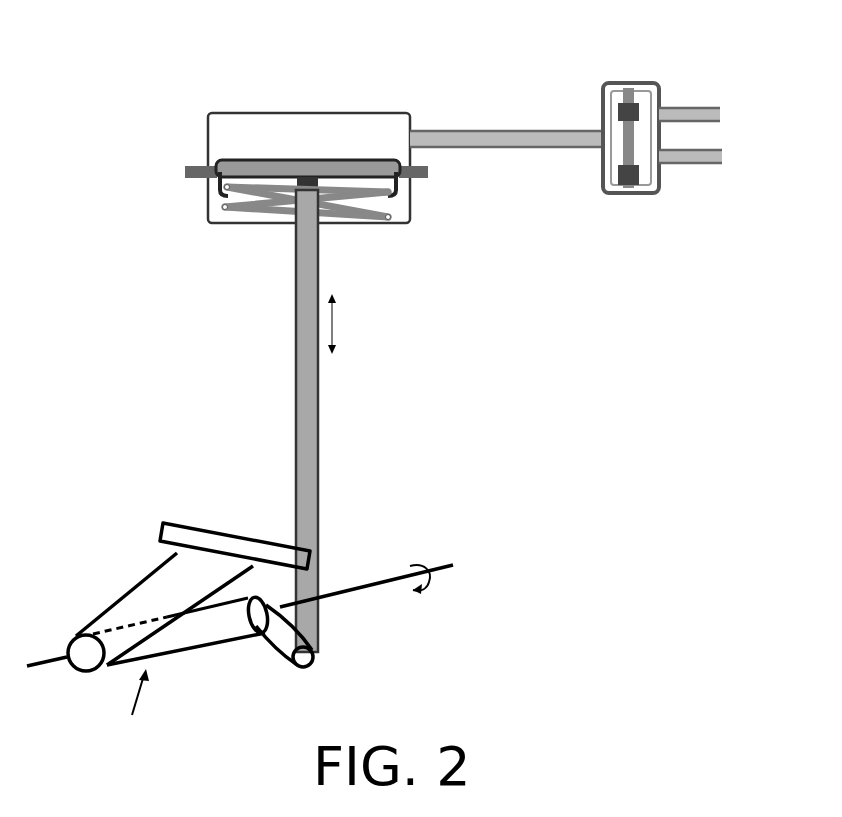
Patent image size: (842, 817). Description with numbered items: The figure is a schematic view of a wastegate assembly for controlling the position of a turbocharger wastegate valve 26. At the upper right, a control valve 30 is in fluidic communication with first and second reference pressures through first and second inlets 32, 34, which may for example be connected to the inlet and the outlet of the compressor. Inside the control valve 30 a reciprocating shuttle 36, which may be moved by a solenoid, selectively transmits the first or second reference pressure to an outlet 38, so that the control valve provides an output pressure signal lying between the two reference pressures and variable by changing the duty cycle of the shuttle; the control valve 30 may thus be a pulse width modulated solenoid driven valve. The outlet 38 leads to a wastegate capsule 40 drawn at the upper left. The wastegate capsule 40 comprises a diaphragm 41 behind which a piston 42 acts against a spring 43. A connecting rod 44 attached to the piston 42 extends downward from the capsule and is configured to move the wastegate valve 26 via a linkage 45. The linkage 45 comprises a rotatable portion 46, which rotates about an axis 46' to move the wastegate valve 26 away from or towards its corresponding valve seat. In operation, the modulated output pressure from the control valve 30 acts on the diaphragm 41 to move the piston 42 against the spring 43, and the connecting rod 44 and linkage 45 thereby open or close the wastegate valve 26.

The wastegate valve 26 is at (187, 527).
The control valve 30 is at (613, 197).
The first inlet 32 is at (722, 163).
The second inlet 34 is at (728, 110).
The reciprocating shuttle 36 is at (625, 112).
The outlet 38 is at (592, 135).
The wastegate capsule 40 is at (260, 112).
The diaphragm 41 is at (325, 162).
The piston 42 is at (348, 172).
The spring 43 is at (340, 195).
The connecting rod 44 is at (308, 382).
The linkage 45 is at (133, 712).
The rotatable portion 46 is at (190, 664).
The axis 46' is at (262, 615).